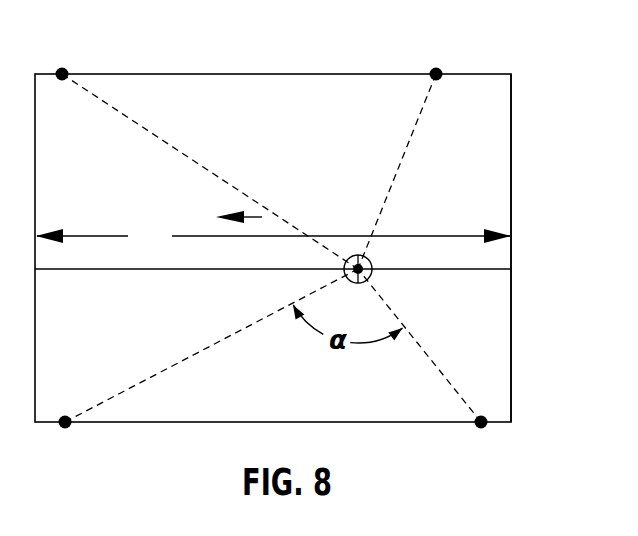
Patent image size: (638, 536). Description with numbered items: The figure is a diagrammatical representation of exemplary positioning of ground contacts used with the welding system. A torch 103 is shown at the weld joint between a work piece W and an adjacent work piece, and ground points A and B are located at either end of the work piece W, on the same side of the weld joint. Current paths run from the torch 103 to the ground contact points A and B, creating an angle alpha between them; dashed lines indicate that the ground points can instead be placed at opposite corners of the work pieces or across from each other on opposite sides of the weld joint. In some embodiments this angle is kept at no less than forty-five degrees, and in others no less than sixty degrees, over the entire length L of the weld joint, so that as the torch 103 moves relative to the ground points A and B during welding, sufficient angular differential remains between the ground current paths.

The torch 103 is at (371, 262).
The length of the weld joint L is at (273, 236).
The work piece W is at (478, 161).
The ground point A is at (481, 444).
The ground point B is at (82, 22).